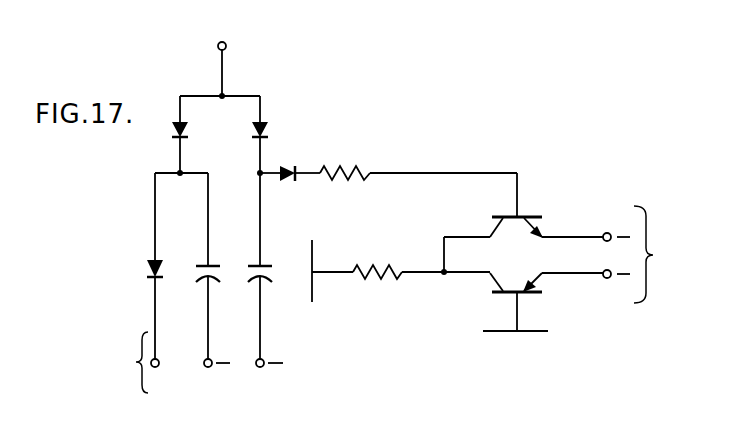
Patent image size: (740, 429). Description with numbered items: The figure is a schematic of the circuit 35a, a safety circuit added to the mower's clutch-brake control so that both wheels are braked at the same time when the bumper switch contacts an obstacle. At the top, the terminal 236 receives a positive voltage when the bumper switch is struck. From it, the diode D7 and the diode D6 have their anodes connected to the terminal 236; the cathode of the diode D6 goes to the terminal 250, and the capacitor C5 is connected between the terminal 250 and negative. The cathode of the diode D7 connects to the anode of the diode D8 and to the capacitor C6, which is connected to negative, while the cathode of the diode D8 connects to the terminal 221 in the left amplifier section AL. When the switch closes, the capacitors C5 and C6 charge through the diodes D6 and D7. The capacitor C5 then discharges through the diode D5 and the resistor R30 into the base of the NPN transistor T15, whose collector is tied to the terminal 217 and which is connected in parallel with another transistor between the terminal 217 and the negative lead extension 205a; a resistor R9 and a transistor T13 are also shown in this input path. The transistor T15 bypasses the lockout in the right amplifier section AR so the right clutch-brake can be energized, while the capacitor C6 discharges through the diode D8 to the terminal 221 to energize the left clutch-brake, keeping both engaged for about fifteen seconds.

The terminal 236 is at (226, 46).
The terminal 250 is at (258, 174).
The terminal 221 is at (157, 367).
The terminal 217 is at (442, 275).
The circuit 35a is at (434, 148).
The negative lead extension 205a is at (587, 236).
The diode D7 is at (170, 128).
The diode D6 is at (270, 129).
The diode D5 is at (291, 178).
The diode D8 is at (145, 266).
The capacitor C6 is at (195, 264).
The capacitor C5 is at (268, 264).
The resistor R30 is at (344, 172).
The resistor R9 is at (372, 267).
The NPN transistor T15 is at (527, 218).
The transistor T13 is at (530, 294).
The left amplifier section AL is at (130, 362).
The right amplifier section AR is at (661, 254).